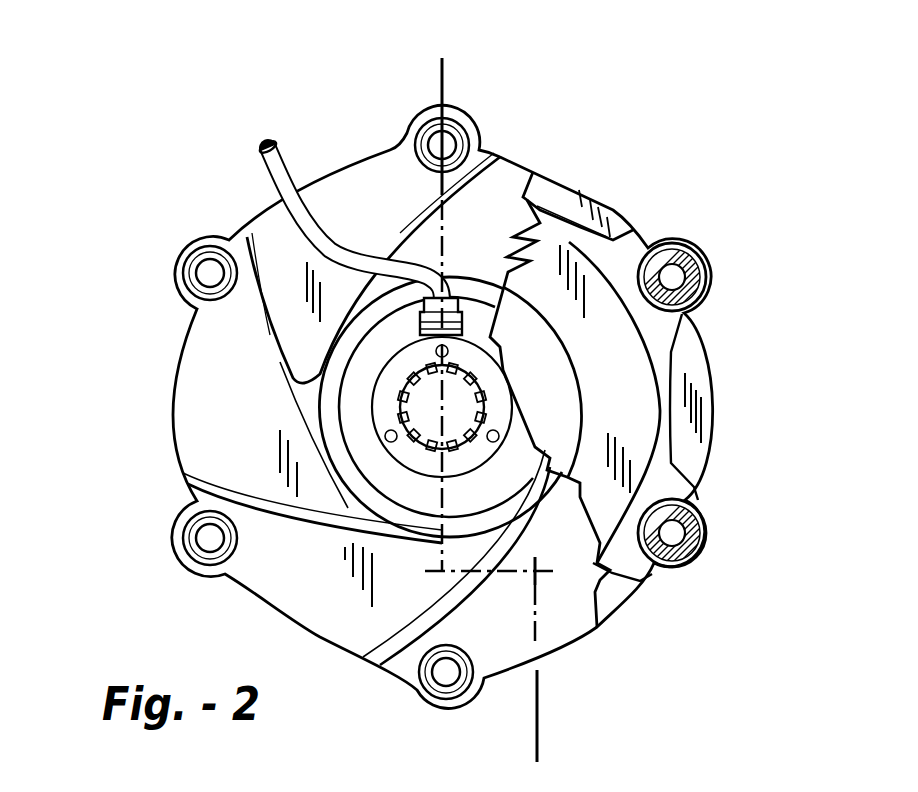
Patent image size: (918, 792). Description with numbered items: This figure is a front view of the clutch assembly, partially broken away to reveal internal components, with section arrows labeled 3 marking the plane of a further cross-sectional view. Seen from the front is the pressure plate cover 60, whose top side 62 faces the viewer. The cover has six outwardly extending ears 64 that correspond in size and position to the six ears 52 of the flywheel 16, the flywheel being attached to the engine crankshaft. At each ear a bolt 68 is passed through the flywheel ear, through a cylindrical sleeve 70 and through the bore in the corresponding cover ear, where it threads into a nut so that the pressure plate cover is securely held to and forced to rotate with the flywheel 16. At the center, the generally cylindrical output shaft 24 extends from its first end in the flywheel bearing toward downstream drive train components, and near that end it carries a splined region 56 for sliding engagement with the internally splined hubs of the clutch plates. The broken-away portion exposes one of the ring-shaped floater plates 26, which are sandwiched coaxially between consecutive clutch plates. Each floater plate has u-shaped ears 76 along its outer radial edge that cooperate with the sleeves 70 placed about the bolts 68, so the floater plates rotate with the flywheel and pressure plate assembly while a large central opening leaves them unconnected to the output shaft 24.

The flywheel 16 is at (557, 190).
The output shaft 24 is at (410, 416).
The floater plates 26 is at (600, 228).
The ears 52 is at (703, 503).
The splined region 56 is at (484, 380).
The pressure plate cover 60 is at (214, 352).
The top side 62 is at (293, 577).
The ears 64 is at (210, 236).
The bolt 68 is at (670, 545).
The cylindrical sleeve 70 is at (700, 538).
The u-shaped ears 76 is at (694, 338).
The section line 3- 3 is at (450, 83).